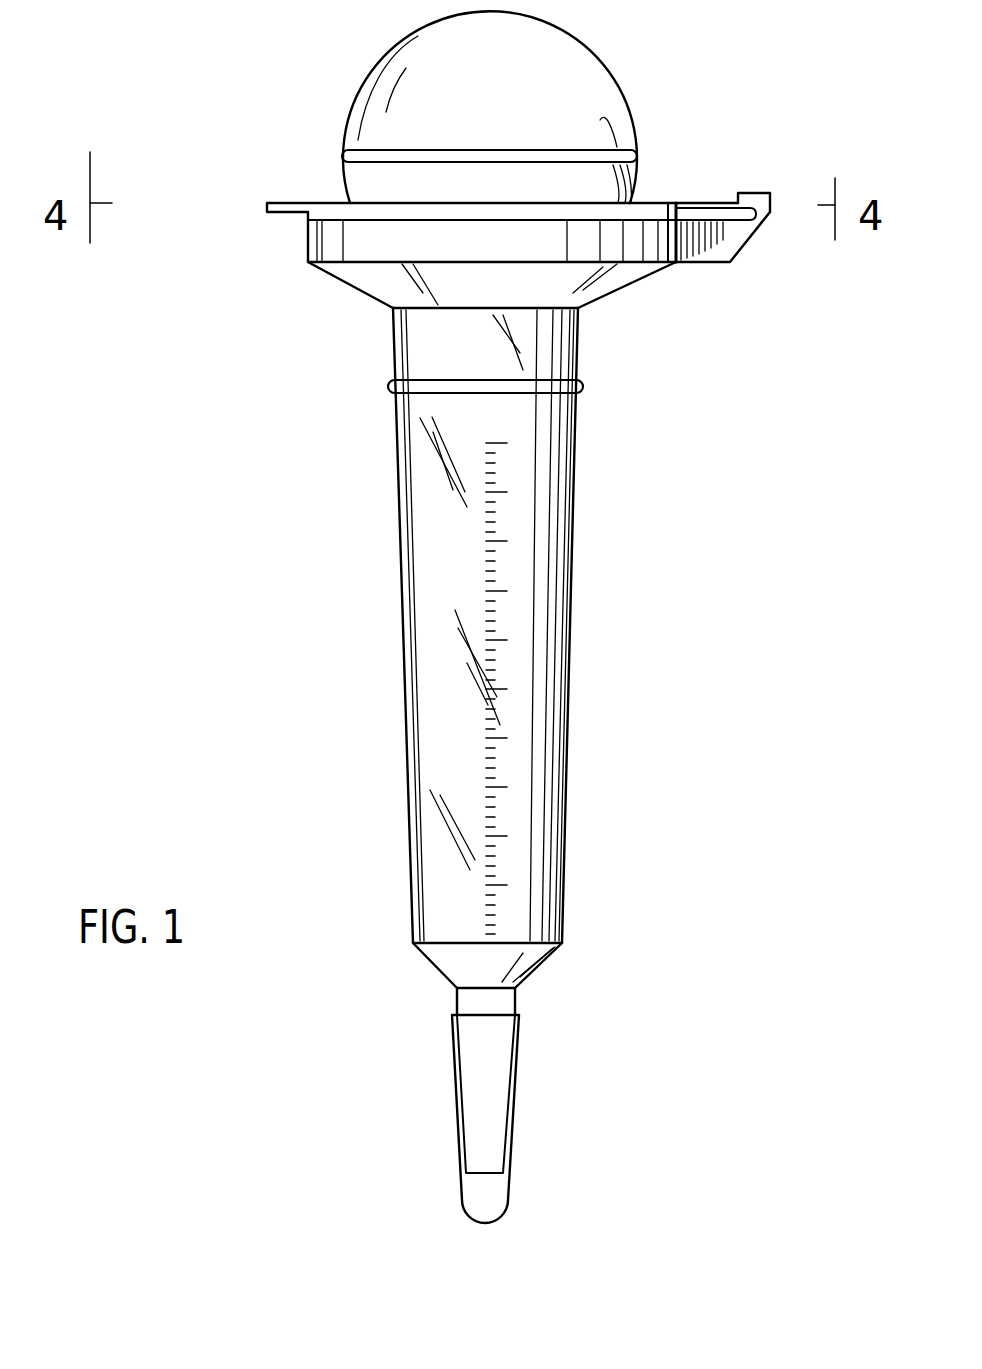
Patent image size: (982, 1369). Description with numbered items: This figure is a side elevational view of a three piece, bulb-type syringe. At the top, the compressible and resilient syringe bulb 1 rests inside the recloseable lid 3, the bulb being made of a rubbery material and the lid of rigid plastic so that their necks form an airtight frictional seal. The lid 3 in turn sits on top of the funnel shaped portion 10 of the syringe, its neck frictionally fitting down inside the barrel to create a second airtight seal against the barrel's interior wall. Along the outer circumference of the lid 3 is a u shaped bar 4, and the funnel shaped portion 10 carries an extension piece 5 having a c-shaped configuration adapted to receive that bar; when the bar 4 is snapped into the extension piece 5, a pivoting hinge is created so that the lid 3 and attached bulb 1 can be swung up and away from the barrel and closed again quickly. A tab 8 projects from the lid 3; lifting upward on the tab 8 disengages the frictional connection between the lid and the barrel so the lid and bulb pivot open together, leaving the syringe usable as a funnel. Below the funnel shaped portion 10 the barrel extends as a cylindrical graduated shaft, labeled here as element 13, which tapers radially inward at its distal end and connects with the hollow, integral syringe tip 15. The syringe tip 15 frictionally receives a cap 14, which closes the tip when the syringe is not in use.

The syringe bulb 1 is at (632, 120).
The recloseable lid 3 is at (322, 202).
The u shaped bar 4 is at (706, 203).
The extension piece 5 is at (753, 238).
The tab 8 is at (278, 202).
The funnel shaped portion 10 is at (620, 290).
The graduated tube 13 is at (523, 695).
The cap 14 is at (514, 1123).
The syringe tip 15 is at (461, 1106).